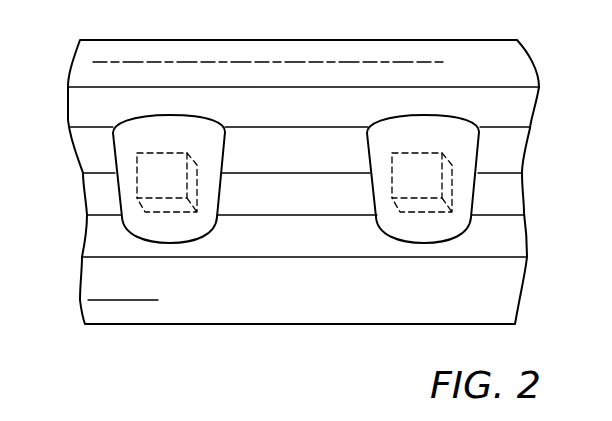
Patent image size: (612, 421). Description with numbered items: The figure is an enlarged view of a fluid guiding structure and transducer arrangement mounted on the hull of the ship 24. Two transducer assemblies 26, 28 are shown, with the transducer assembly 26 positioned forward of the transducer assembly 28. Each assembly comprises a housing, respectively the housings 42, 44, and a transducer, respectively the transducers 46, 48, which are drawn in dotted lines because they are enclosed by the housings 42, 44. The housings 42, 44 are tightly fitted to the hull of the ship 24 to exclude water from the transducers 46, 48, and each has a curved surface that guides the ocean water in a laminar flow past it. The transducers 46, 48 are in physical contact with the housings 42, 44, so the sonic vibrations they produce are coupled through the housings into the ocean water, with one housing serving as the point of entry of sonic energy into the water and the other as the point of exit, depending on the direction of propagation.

The hull of the ship 24 is at (70, 66).
The transducer assembly 26 is at (403, 251).
The transducer assembly 28 is at (196, 251).
The housing 42 is at (453, 225).
The housing 44 is at (206, 226).
The transducer 46 is at (453, 185).
The transducer 48 is at (198, 183).